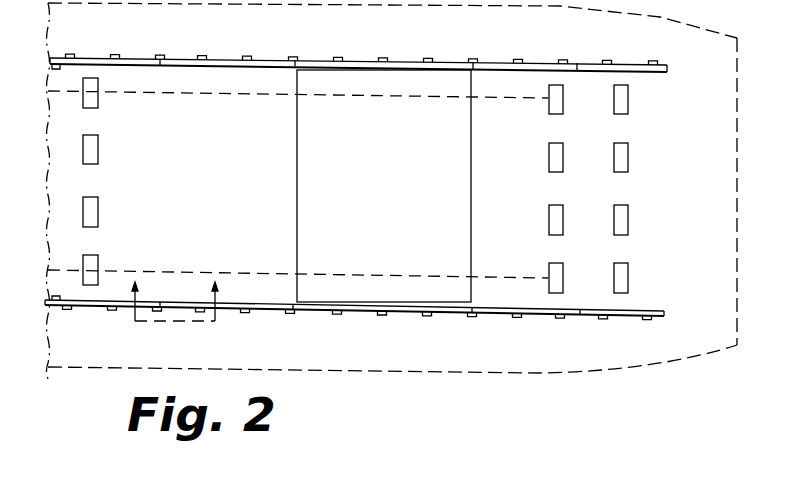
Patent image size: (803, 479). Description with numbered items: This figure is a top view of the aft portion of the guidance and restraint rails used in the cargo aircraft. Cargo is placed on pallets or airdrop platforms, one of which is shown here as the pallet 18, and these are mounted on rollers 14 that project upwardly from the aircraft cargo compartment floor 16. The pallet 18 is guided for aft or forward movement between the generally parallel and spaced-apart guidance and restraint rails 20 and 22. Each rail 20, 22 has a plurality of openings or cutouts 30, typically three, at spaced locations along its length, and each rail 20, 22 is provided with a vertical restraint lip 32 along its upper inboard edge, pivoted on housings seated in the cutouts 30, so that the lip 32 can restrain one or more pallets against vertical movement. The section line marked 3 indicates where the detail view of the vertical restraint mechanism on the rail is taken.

The rollers 14 is at (98, 205).
The aircraft cargo compartment floor 16 is at (536, 372).
The pallet 18 is at (302, 198).
The guidance and restraint rail 20 is at (272, 313).
The guidance and restraint rail 22 is at (272, 59).
The openings or cutouts 30 is at (168, 57).
The vertical restraint lip 32 is at (356, 190).
The section line 3- 3 is at (175, 299).